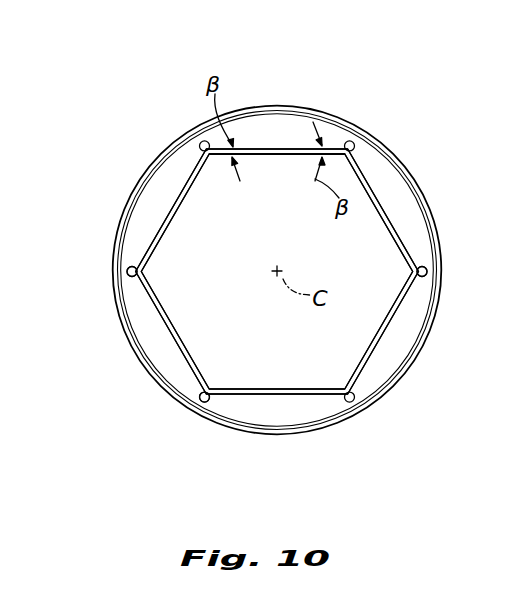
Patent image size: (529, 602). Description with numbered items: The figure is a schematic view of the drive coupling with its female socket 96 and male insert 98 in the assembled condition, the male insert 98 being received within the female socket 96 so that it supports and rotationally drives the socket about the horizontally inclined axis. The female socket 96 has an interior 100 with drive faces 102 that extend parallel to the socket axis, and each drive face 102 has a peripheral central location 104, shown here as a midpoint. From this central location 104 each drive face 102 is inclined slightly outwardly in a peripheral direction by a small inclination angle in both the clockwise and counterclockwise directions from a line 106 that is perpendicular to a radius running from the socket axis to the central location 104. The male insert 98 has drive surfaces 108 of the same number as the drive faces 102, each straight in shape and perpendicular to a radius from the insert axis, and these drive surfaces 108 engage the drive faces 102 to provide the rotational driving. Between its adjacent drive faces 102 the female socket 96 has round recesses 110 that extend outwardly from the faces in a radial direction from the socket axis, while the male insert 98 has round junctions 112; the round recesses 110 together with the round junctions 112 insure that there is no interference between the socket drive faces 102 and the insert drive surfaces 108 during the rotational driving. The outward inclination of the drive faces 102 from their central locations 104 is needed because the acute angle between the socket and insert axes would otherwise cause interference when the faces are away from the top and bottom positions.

The female socket 96 is at (182, 133).
The male insert 98 is at (161, 225).
The interior 100 is at (196, 384).
The drive face 102 is at (198, 167).
The peripheral central location 104 is at (260, 156).
The line 106 is at (313, 157).
The drive surface 108 is at (292, 148).
The recess 110 is at (202, 141).
The round junction 112 is at (344, 147).